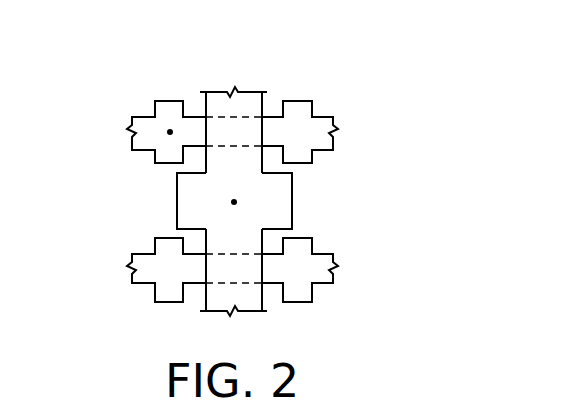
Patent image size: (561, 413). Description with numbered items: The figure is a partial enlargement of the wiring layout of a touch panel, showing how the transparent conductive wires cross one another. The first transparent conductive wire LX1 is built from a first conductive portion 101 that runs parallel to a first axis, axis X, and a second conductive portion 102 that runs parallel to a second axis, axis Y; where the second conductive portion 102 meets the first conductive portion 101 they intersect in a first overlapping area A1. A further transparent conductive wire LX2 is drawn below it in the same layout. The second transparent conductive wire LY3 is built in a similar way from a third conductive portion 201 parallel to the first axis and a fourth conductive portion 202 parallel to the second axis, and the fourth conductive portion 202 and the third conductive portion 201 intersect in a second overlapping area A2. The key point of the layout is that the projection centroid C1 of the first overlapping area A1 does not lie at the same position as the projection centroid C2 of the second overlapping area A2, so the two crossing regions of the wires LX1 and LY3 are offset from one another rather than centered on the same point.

The first conductive portion 101 is at (268, 122).
The second conductive portion 102 is at (153, 102).
The third conductive portion 201 is at (189, 200).
The fourth conductive portion 202 is at (193, 166).
The projection centroid of the first overlapping area C1 is at (170, 129).
The projection centroid of the second overlapping area C2 is at (236, 200).
The first overlapping area A1 is at (151, 156).
The second overlapping area A2 is at (251, 233).
The first transparent conductive wire LX1 is at (366, 133).
The first transparent conductive wire LX2 is at (366, 270).
The second transparent conductive wire LY3 is at (233, 62).